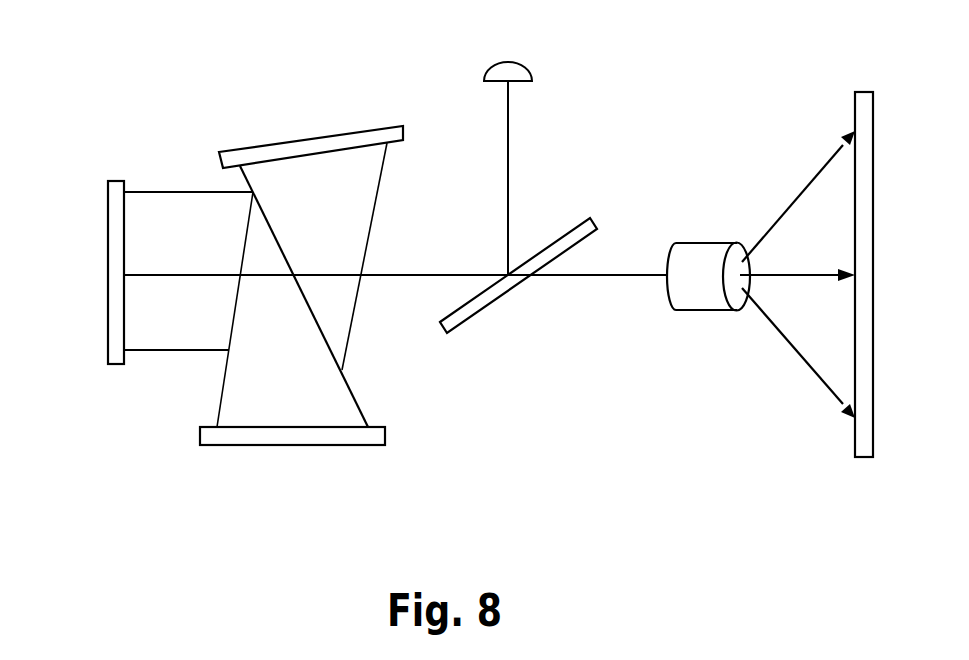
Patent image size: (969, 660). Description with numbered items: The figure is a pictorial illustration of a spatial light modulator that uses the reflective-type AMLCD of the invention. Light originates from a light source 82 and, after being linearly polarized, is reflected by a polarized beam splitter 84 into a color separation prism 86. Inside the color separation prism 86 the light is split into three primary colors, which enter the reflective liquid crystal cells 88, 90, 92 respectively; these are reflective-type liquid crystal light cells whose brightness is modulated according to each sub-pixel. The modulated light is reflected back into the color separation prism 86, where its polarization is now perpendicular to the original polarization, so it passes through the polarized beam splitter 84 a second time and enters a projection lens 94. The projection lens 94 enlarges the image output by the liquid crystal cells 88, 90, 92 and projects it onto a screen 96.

The light source 82 is at (510, 70).
The polarized beam splitter 84 is at (607, 189).
The color separation prism 86 is at (395, 386).
The reflective liquid crystal cell 88 is at (363, 140).
The reflective liquid crystal cell 90 is at (117, 182).
The reflective liquid crystal cell 92 is at (358, 435).
The projection lens 94 is at (710, 250).
The screen 96 is at (862, 109).